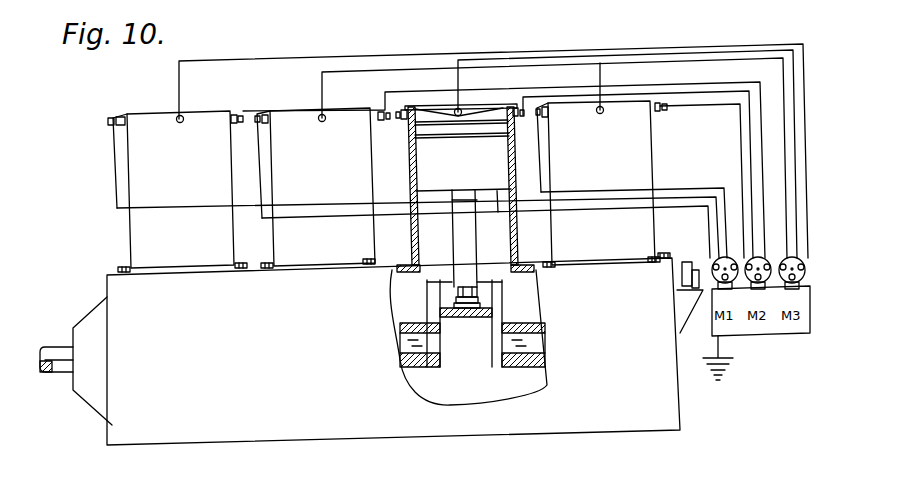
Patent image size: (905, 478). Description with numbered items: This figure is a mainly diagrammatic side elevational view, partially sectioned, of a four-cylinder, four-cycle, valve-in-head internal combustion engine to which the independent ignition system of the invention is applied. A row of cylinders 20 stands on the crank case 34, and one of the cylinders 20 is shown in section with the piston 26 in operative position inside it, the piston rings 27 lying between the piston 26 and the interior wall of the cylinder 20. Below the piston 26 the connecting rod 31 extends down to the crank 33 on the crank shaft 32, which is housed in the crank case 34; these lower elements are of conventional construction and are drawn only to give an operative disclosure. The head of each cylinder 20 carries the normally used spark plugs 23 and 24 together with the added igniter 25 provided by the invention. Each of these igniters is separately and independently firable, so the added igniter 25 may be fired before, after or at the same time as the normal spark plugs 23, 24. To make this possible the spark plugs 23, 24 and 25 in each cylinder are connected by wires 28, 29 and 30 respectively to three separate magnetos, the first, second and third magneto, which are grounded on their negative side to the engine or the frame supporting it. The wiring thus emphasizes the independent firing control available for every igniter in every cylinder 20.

The cylinder 20 is at (227, 184).
The spark plug 23 is at (410, 112).
The spark plug 24 is at (513, 106).
The igniter 25 is at (178, 115).
The piston 26 is at (478, 206).
The piston rings 27 is at (415, 136).
The wires 28 is at (716, 205).
The wires 29 is at (746, 101).
The wires 30 is at (684, 58).
The connecting rod 31 is at (471, 243).
The crank shaft 32 is at (55, 373).
The crank 33 is at (490, 340).
The crank case 34 is at (234, 432).